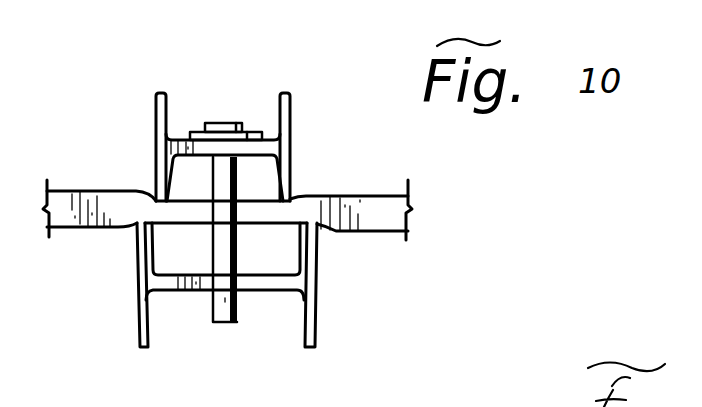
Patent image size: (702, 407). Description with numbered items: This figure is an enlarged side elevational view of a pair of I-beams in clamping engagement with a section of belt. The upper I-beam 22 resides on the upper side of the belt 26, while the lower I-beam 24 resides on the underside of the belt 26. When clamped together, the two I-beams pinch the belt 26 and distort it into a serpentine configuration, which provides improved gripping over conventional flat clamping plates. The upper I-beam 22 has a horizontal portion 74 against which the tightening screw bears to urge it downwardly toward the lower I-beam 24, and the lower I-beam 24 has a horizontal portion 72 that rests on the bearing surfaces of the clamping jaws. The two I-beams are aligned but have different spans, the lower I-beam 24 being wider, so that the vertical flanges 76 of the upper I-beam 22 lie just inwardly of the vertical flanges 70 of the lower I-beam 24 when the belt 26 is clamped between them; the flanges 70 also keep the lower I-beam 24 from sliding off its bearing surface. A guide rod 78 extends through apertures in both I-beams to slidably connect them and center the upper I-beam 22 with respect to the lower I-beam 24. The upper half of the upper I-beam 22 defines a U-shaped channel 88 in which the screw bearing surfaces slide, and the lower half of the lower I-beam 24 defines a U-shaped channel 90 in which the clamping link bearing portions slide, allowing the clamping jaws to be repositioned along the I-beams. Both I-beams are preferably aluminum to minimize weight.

The upper I-beam 22 is at (198, 126).
The lower I-beam 24 is at (222, 315).
The belt 26 is at (390, 232).
The vertical flanges 70 is at (137, 248).
The horizontal portion 72 is at (265, 289).
The horizontal portion 74 is at (240, 148).
The vertical flanges 76 is at (288, 108).
The guide rod 78 is at (226, 256).
The U-shaped channel 88 is at (182, 133).
The U-shaped channel 90 is at (165, 308).